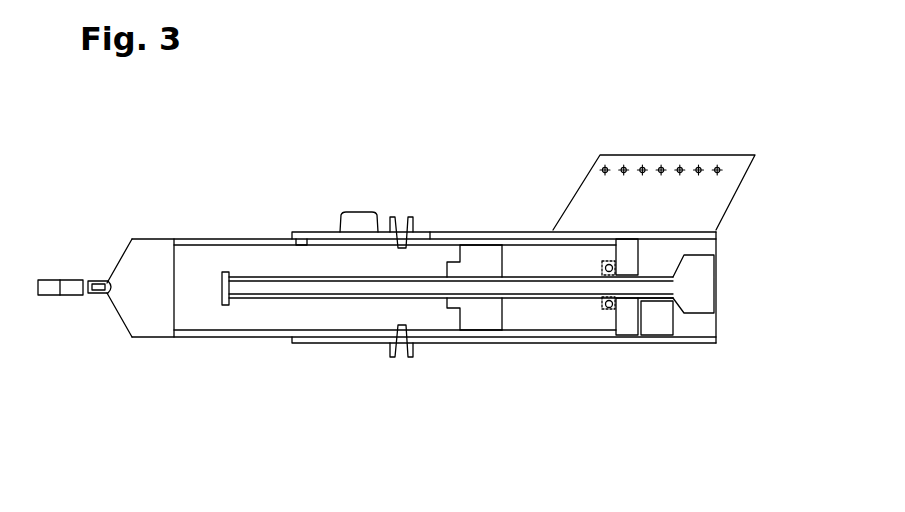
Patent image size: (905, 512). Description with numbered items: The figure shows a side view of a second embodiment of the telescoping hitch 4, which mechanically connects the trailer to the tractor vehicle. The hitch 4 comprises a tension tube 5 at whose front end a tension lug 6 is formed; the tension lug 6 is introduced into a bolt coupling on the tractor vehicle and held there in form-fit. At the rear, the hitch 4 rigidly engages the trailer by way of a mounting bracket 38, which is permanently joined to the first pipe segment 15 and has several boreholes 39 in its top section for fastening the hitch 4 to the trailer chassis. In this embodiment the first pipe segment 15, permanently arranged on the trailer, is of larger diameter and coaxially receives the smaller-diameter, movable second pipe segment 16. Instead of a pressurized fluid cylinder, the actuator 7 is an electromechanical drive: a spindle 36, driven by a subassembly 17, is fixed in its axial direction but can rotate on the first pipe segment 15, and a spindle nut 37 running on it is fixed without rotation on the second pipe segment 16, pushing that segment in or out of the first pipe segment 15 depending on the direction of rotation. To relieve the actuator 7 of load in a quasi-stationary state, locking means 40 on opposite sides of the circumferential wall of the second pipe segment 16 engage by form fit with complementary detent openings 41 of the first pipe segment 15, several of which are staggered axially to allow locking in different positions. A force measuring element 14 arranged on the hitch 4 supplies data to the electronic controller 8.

The hitch 4 is at (415, 120).
The tension tube 5 is at (716, 330).
The tension lug 6 is at (75, 280).
The actuator 7 is at (543, 255).
The electronic controller 8 is at (658, 325).
The force measuring element 14 is at (102, 297).
The first pipe segment 15 is at (304, 232).
The second pipe segment 16 is at (222, 239).
The subassembly 17 is at (684, 295).
The spindle 36 is at (270, 290).
The spindle nut 37 is at (487, 320).
The mounting bracket 38 is at (738, 155).
The boreholes 39 is at (677, 155).
The locking means 40 is at (407, 217).
The detent openings 41 is at (365, 212).